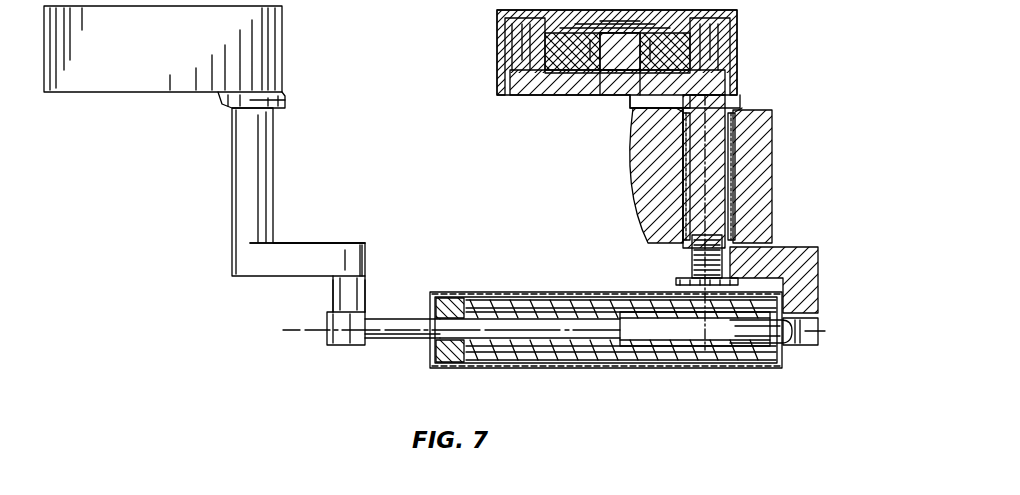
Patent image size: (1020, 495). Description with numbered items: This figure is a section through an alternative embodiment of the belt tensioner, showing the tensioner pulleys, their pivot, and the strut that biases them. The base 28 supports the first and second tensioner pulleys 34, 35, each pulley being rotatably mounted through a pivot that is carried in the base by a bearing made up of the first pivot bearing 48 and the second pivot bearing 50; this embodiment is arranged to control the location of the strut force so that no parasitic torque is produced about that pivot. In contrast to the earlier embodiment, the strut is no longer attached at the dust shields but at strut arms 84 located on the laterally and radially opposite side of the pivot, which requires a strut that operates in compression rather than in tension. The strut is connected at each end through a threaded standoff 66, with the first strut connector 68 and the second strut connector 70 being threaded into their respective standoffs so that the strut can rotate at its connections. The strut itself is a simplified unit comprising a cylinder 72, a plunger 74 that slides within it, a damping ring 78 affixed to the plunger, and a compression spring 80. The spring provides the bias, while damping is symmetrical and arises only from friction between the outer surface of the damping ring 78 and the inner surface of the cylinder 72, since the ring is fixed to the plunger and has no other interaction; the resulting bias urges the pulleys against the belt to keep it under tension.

The base 28 is at (633, 172).
The first tensioner pulley 34 is at (737, 46).
The second tensioner pulley 35 is at (285, 50).
The first pivot bearing 48 is at (735, 133).
The second pivot bearing 50 is at (735, 212).
The threaded standoff 66 is at (333, 299).
The first strut connector 68 is at (812, 348).
The second strut connector 70 is at (232, 187).
The cylinder 72 is at (530, 292).
The plunger 74 is at (390, 318).
The damping ring 78 is at (452, 300).
The compression spring 80 is at (672, 362).
The strut arm 84 is at (308, 243).